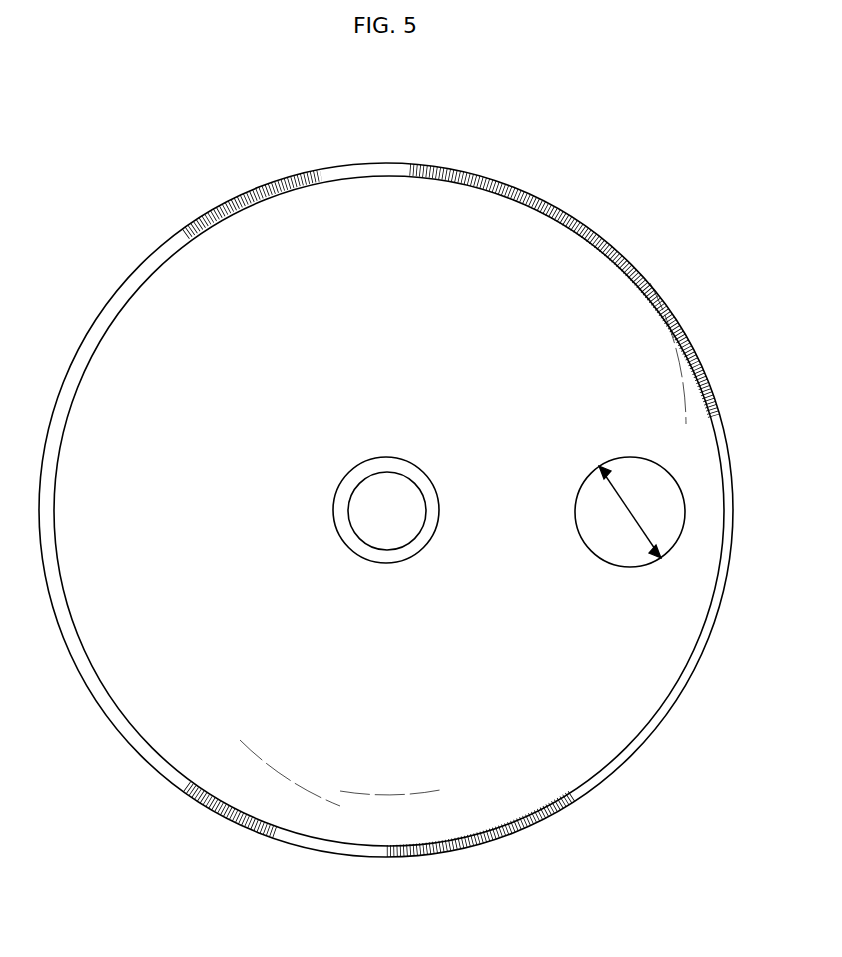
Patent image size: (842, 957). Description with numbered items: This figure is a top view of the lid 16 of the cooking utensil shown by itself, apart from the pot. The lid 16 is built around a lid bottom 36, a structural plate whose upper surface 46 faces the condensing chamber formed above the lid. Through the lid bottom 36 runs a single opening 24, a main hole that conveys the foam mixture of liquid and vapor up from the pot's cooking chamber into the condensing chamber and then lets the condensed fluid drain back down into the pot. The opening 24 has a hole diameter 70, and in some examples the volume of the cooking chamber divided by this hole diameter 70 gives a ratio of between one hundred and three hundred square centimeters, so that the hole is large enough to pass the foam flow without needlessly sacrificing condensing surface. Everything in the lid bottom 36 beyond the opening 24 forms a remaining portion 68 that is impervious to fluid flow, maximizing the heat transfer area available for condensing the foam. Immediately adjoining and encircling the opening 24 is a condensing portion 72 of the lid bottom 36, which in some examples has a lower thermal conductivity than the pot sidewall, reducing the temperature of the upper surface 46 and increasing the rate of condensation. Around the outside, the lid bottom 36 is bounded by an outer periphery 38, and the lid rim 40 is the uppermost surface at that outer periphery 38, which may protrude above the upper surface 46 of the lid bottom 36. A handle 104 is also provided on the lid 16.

The lid 16 is at (657, 204).
The opening 24 is at (647, 499).
The lid bottom 36 is at (371, 230).
The outer periphery 38 is at (142, 758).
The lid rim 40 is at (97, 331).
The upper surface 46 is at (310, 742).
The remaining portion 68 is at (362, 775).
The hole diameter 70 is at (632, 515).
The condensing portion 72 is at (617, 392).
The handle 104 is at (438, 490).